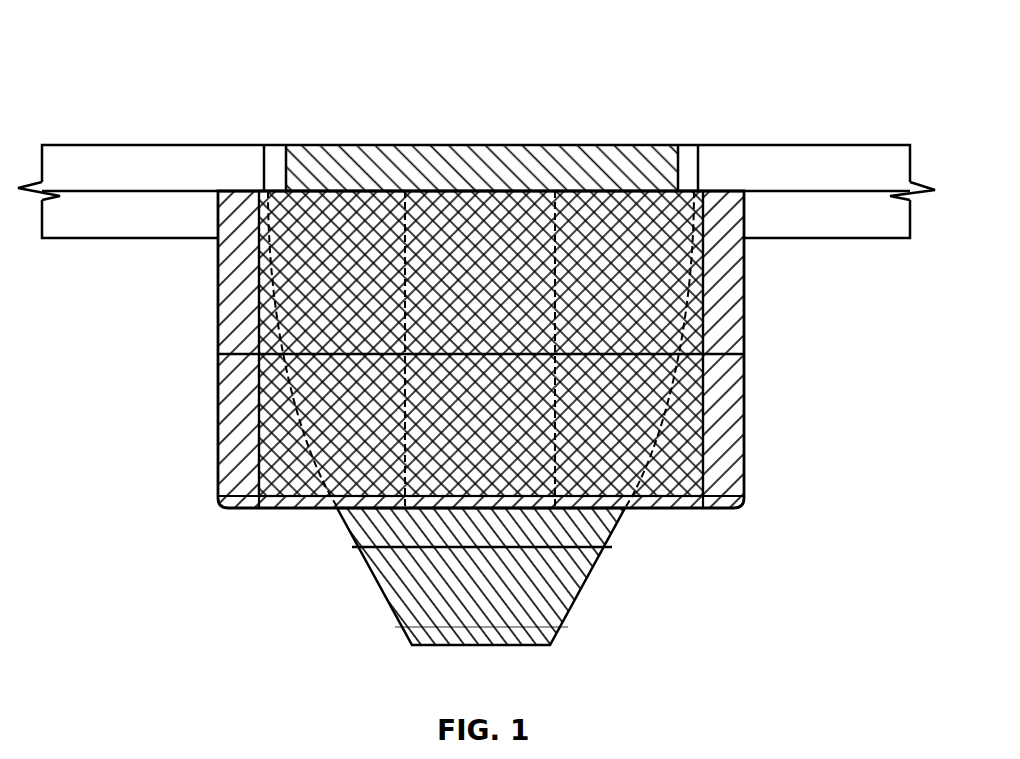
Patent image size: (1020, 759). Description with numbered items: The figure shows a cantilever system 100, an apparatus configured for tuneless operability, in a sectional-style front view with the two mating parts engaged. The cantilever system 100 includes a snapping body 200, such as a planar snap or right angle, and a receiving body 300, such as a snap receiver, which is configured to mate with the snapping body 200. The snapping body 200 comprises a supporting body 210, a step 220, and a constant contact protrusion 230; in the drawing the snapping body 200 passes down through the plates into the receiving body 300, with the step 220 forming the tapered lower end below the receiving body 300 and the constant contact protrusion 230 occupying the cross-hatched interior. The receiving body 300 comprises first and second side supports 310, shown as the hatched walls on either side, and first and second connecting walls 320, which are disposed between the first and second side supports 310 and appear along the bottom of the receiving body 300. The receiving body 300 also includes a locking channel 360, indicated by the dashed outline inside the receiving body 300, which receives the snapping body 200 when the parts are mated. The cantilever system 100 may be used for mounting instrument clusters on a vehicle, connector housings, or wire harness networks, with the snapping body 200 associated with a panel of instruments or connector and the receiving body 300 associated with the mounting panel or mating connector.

The cantilever system 100 is at (135, 57).
The snapping body 200 is at (453, 138).
The supporting body 210 is at (676, 278).
The step 220 is at (355, 522).
The constant contact protrusion 230 is at (481, 343).
The receiving body 300 is at (215, 291).
The first and second side supports 310 is at (215, 376).
The first and second connecting walls 320 is at (700, 482).
The locking channel 360 is at (558, 266).